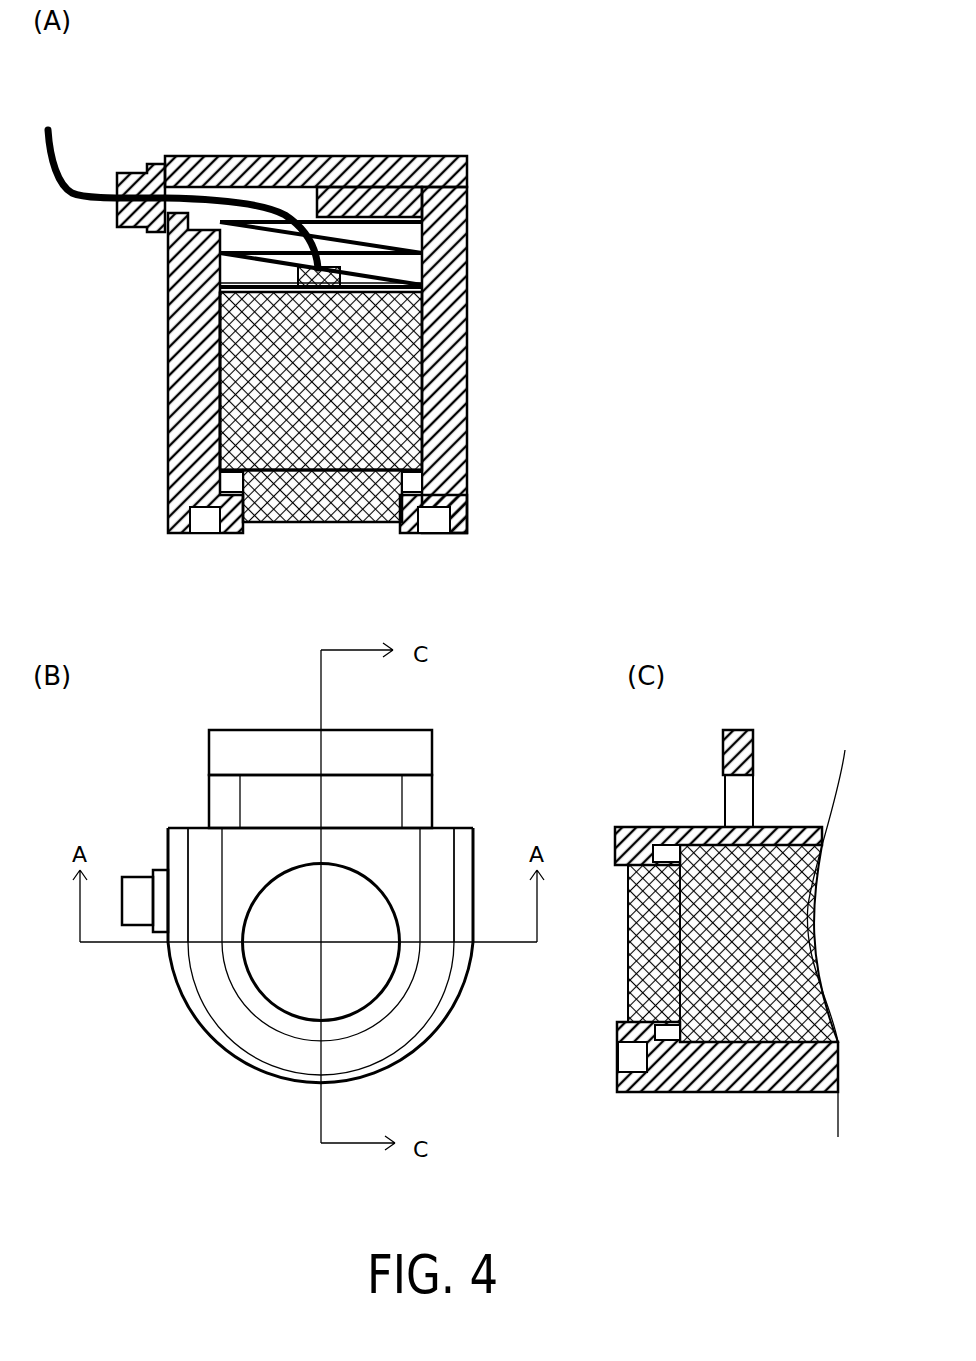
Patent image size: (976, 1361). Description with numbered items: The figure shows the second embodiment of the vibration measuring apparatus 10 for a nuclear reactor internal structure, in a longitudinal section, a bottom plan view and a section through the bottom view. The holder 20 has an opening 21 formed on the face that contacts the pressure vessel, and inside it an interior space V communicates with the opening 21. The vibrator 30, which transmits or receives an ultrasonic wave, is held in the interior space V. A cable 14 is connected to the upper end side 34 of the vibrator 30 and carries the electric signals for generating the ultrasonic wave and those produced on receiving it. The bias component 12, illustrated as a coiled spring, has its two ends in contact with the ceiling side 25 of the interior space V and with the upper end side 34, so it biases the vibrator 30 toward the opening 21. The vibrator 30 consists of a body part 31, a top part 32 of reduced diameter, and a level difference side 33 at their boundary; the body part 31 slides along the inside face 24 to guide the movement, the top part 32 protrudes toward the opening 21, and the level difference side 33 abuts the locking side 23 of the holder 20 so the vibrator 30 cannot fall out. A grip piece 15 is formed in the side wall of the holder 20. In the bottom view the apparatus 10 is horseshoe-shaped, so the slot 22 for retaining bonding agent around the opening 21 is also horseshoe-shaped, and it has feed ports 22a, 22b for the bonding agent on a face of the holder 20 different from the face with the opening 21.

The vibration measuring apparatus 10 is at (212, 112).
The bias component 12 is at (380, 213).
The cable 14 is at (75, 197).
The grip piece 15 is at (432, 752).
The holder 20 is at (592, 185).
The opening 21 is at (397, 532).
The slot 22 is at (452, 521).
The feed port 22a is at (193, 837).
The feed port 22b is at (453, 837).
The locking side 23 is at (468, 473).
The inside face 24 is at (400, 388).
The ceiling side 25 is at (450, 238).
The vibrator 30 is at (76, 298).
The body part 31 is at (283, 400).
The top part 32 is at (243, 508).
The level difference side 33 is at (225, 485).
The upper end side 34 is at (170, 308).
The interior space V is at (397, 268).